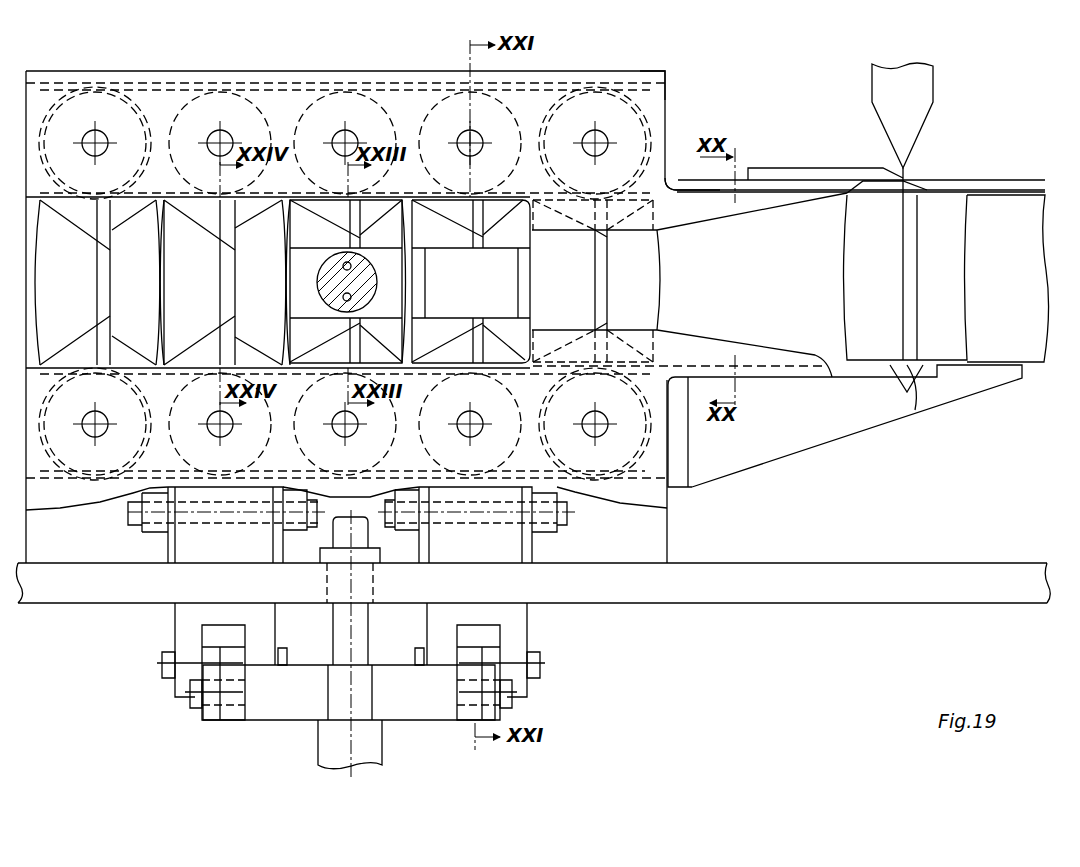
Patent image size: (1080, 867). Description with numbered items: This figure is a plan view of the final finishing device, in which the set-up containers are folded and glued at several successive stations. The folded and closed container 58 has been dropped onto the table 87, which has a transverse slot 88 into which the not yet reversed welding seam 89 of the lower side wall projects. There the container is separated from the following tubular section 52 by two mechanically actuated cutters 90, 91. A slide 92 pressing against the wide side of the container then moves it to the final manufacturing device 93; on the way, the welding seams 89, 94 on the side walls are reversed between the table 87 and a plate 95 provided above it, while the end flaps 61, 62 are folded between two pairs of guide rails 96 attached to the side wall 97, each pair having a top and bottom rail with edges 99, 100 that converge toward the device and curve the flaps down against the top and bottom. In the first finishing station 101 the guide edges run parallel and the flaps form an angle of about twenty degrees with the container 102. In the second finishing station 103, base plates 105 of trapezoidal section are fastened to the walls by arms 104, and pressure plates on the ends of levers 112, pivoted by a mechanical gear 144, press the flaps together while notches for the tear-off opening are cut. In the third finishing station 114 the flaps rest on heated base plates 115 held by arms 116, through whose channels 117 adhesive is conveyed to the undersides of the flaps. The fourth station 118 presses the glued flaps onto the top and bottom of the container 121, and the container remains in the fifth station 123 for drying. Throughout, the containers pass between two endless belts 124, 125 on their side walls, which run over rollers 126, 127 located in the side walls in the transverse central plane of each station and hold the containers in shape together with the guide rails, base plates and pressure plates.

The tubular section 52 is at (914, 131).
The container 58 is at (849, 252).
The end flap 61 is at (216, 224).
The end flap 62 is at (214, 340).
The table 87 is at (995, 380).
The transverse slot 88 is at (918, 400).
The welding seam 89 is at (895, 380).
The cutter 90 is at (1010, 172).
The cutter 91 is at (805, 160).
The slide 92 is at (1040, 296).
The final manufacturing device 93 is at (676, 96).
The welding seam 94 is at (905, 170).
The plate 95 is at (686, 188).
The guide rails 96 is at (714, 211).
The side wall 97 is at (665, 110).
The edge 99 is at (778, 350).
The edge 100 is at (796, 208).
The first finishing station 101 is at (562, 194).
The container 102 is at (652, 272).
The second finishing station 103 is at (438, 194).
The arms 104 is at (518, 262).
The base plates 105 is at (506, 293).
The levers 112 is at (175, 623).
The third finishing station 114 is at (318, 194).
The base plates 115 is at (298, 291).
The arms 116 is at (323, 266).
The channels 117 is at (352, 268).
The fourth station 118 is at (186, 194).
The container 121 is at (162, 291).
The fifth station 123 is at (64, 194).
The endless belt 124 is at (152, 88).
The endless belt 125 is at (112, 478).
The rollers 126 is at (186, 114).
The rollers 127 is at (192, 462).
The mechanical gear 144 is at (309, 668).